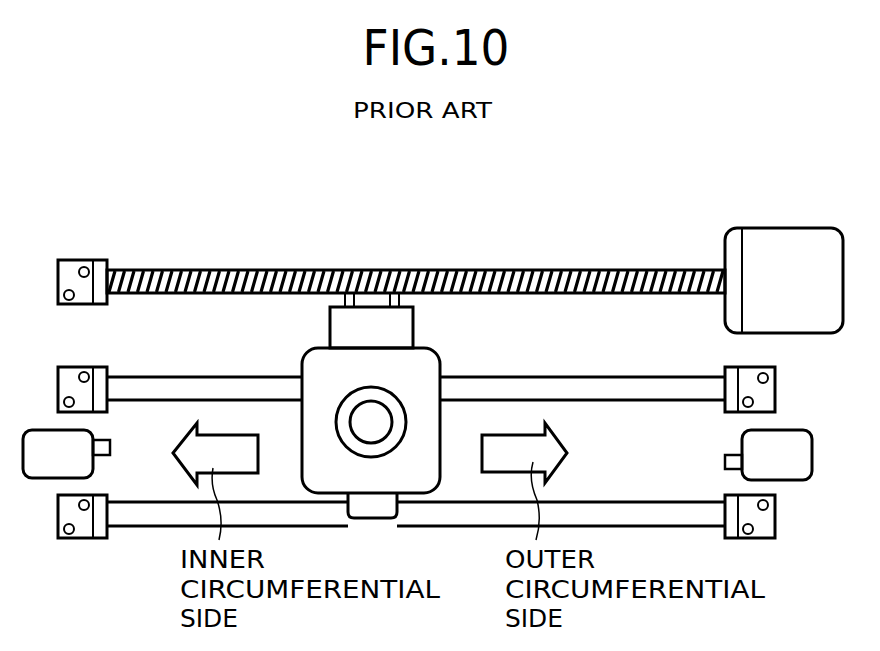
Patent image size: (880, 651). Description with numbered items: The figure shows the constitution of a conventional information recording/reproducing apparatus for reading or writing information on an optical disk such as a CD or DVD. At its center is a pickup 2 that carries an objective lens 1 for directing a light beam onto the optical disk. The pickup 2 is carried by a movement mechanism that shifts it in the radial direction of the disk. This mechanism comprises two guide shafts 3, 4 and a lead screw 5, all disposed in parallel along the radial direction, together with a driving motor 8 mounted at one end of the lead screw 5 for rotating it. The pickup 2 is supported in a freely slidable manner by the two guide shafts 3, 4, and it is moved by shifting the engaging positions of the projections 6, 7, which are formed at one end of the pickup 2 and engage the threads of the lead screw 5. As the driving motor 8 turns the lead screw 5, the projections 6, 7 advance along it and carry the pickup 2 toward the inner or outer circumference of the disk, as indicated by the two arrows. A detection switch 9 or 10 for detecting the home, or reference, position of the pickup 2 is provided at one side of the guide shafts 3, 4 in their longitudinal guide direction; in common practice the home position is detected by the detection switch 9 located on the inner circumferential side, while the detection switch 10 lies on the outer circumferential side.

The objective lens 1 is at (360, 438).
The pickup 2 is at (432, 363).
The guide shaft 3 is at (206, 390).
The guide shaft 4 is at (145, 515).
The lead screw 5 is at (248, 283).
The projection 6 is at (348, 292).
The projection 7 is at (398, 292).
The driving motor 8 is at (811, 248).
The detection switch 9 is at (39, 442).
The detection switch 10 is at (795, 440).